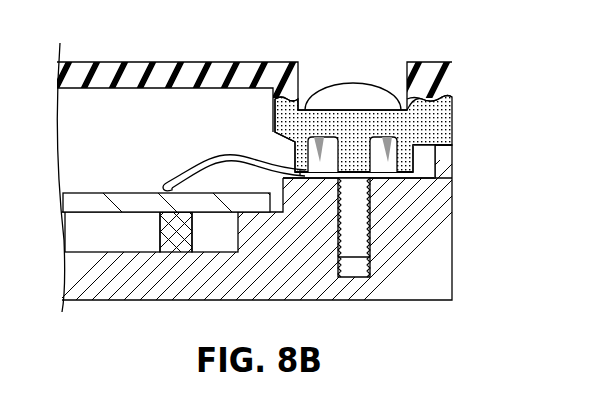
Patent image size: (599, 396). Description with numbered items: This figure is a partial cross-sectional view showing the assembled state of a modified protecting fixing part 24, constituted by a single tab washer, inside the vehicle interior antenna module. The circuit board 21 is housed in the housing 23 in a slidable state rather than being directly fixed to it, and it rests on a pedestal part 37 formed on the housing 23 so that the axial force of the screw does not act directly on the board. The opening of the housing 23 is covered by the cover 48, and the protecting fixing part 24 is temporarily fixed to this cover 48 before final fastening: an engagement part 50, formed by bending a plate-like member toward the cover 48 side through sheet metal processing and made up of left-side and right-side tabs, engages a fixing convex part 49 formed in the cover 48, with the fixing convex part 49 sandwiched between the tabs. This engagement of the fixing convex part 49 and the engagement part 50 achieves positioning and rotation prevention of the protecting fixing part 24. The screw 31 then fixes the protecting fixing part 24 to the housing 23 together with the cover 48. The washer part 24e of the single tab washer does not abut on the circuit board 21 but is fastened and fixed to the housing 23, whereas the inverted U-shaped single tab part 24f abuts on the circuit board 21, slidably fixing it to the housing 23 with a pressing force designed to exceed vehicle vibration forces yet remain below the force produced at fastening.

The circuit board 21 is at (78, 203).
The housing 23 is at (437, 243).
The protecting fixing part 24 is at (227, 140).
The washer part 24e is at (290, 167).
The single tab part 24f is at (168, 182).
The screw 31 is at (380, 100).
The pedestal part 37 is at (176, 222).
The cover 48 is at (101, 72).
The fixing convex part 49 is at (358, 138).
The engagement part 50 is at (325, 153).